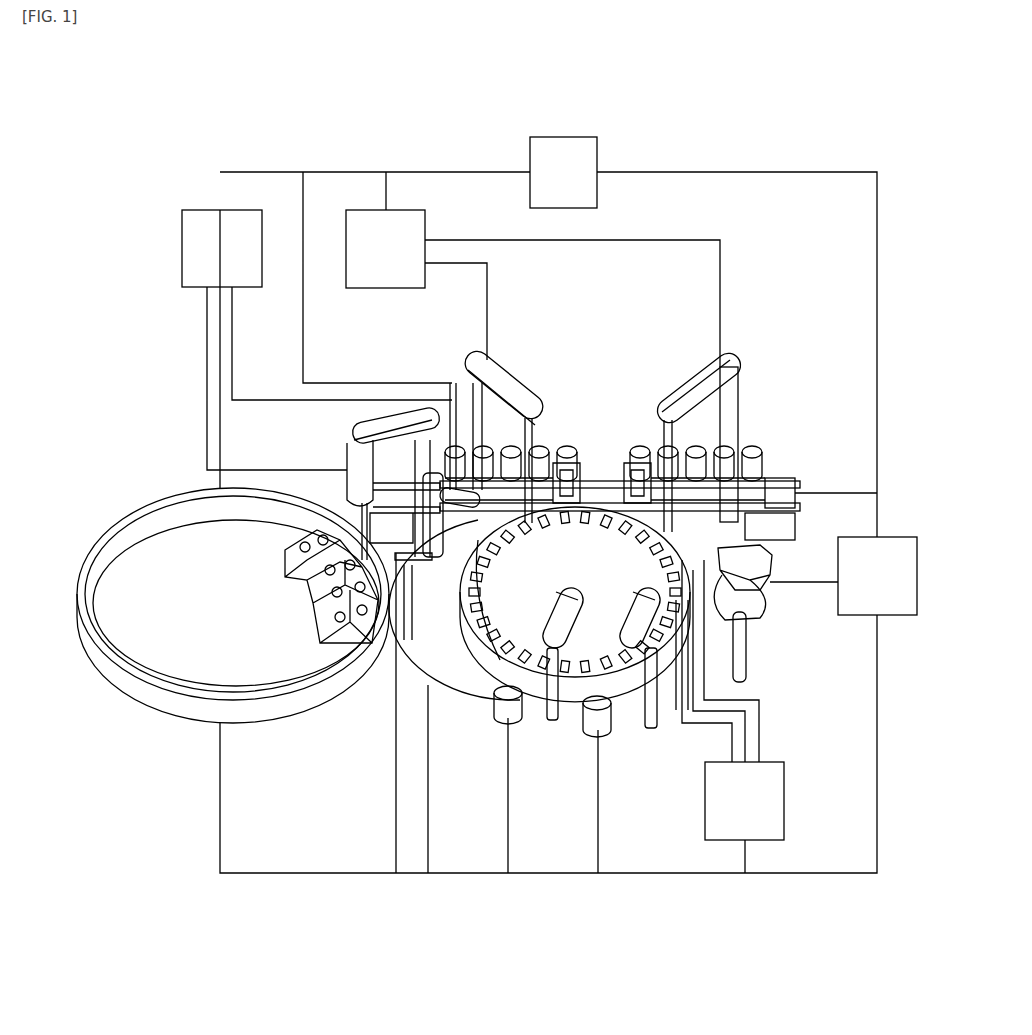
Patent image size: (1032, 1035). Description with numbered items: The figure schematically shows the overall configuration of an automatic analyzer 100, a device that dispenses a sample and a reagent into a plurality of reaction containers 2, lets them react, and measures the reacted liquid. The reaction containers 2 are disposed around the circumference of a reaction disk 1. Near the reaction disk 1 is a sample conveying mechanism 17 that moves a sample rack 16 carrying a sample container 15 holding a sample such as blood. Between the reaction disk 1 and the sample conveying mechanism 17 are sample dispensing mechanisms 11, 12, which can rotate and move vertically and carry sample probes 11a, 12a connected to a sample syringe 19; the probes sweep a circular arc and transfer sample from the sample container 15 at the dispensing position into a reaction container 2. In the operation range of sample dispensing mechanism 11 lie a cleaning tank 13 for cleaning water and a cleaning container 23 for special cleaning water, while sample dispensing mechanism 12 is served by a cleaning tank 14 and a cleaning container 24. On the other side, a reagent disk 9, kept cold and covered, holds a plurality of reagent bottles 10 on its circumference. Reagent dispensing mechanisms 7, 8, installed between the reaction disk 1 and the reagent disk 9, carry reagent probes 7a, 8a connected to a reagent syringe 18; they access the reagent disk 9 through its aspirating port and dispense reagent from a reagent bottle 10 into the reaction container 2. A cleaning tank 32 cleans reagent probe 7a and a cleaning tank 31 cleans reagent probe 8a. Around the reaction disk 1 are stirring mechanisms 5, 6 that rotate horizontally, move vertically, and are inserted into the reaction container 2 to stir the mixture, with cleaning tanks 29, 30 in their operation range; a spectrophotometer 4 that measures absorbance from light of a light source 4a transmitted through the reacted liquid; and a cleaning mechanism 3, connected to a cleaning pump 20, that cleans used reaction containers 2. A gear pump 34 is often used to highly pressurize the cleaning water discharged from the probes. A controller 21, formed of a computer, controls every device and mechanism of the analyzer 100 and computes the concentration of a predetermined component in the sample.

The automatic analyzer 100 is at (175, 92).
The reaction disk 1 is at (475, 668).
The reaction container 2 is at (488, 668).
The cleaning mechanism 3 is at (757, 612).
The spectrophotometer 4 is at (762, 560).
The light source 4a is at (682, 700).
The stirring mechanism 5 is at (550, 722).
The stirring mechanism 6 is at (652, 728).
The reagent dispensing mechanism 7 is at (458, 660).
The reagent probe 7a is at (497, 562).
The reagent dispensing mechanism 8 is at (352, 428).
The reagent probe 8a is at (298, 468).
The reagent disk 9 is at (163, 713).
The reagent bottle 10 is at (312, 637).
The sample dispensing mechanism 11 is at (503, 348).
The sample probe 11a is at (546, 425).
The sample dispensing mechanism 12 is at (744, 340).
The sample probe 12a is at (638, 420).
The cleaning tank 13 is at (567, 520).
The cleaning tank 14 is at (630, 520).
The sample container 15 is at (762, 455).
The sample rack 16 is at (766, 497).
The sample conveying mechanism 17 is at (785, 527).
The reagent syringe 18 is at (182, 240).
The sample syringe 19 is at (360, 273).
The cleaning pump 20 is at (775, 812).
The controller 21 is at (897, 537).
The cleaning container 23 is at (570, 425).
The cleaning container 24 is at (617, 428).
The cleaning tank 29 is at (515, 722).
The cleaning tank 30 is at (603, 735).
The cleaning tank 31 is at (398, 665).
The cleaning tank 32 is at (418, 655).
The gear pump 34 is at (578, 137).